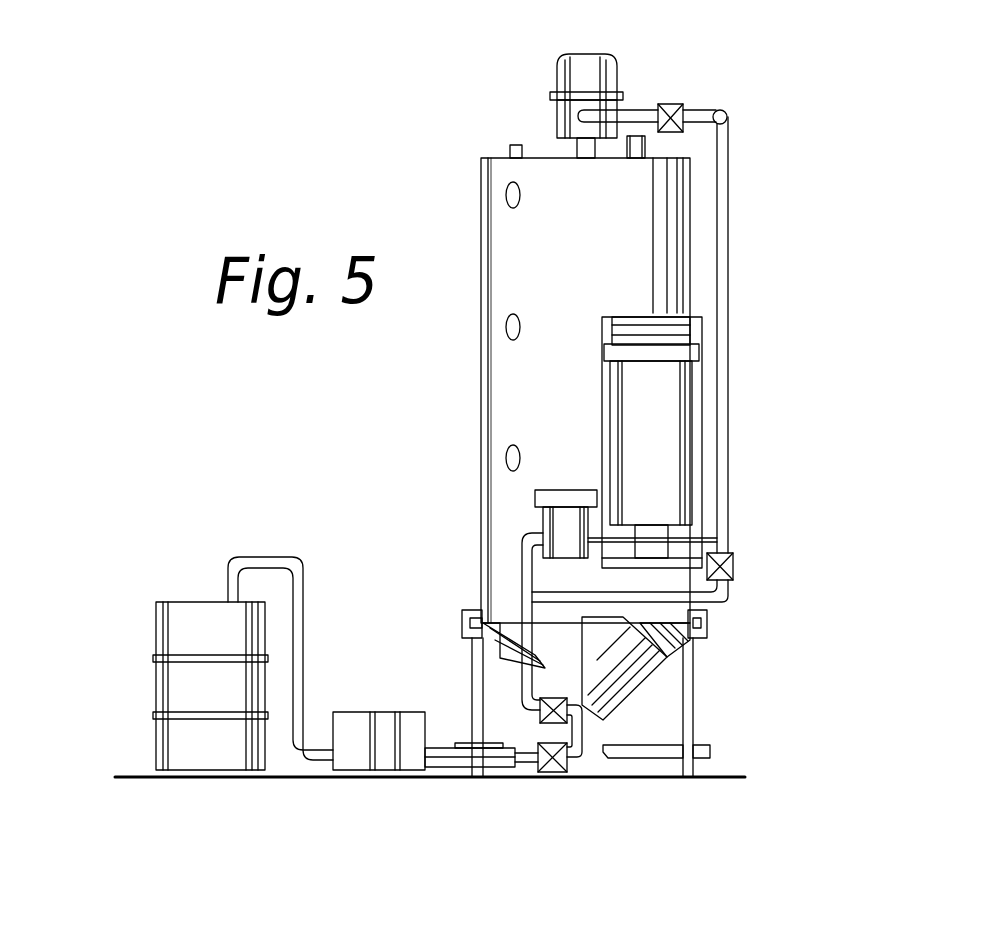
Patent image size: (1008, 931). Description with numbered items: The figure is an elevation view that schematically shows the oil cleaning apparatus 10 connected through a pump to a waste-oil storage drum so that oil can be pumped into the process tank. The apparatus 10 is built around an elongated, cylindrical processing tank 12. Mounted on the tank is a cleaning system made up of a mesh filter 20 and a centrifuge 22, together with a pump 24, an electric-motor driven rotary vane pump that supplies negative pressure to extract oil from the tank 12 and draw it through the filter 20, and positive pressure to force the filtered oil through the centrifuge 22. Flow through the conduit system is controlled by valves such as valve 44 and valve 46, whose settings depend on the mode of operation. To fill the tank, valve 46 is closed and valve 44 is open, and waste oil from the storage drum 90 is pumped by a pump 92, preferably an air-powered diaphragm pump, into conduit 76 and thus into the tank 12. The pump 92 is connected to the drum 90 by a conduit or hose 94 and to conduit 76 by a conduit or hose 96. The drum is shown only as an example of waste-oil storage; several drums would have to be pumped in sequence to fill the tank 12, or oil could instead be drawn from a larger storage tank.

The apparatus 10 is at (418, 461).
The processing tank 12 is at (473, 395).
The mesh filter 20 is at (573, 485).
The centrifuge 22 is at (622, 78).
The pump 24 is at (697, 455).
The valve 44 is at (548, 773).
The valve 46 is at (543, 727).
The conduit 76 is at (527, 757).
The storage drum 90 is at (190, 688).
The pump 92 is at (372, 762).
The conduit or hose 94 is at (303, 625).
The conduit or hose 96 is at (450, 760).